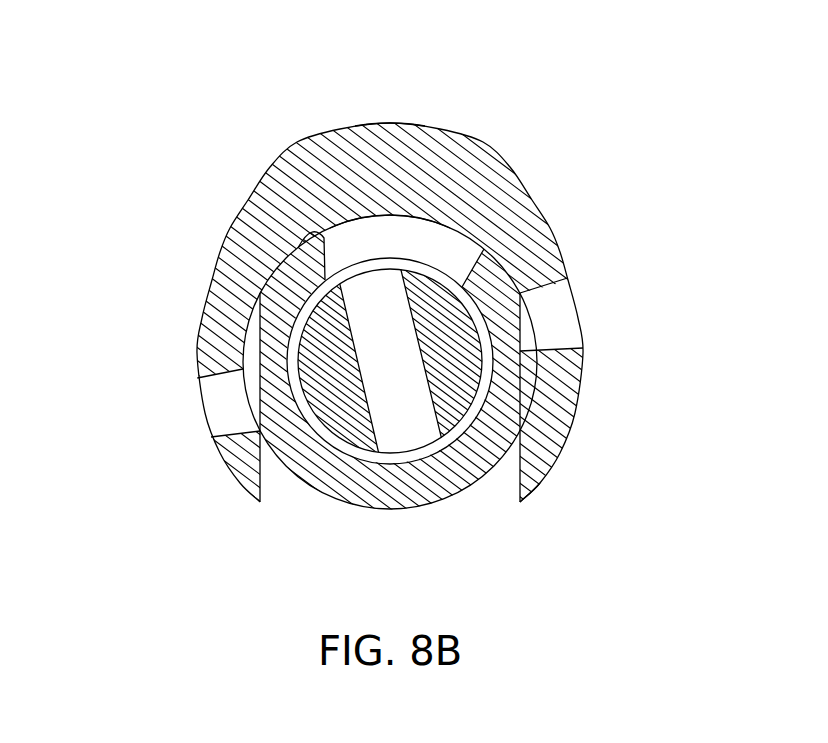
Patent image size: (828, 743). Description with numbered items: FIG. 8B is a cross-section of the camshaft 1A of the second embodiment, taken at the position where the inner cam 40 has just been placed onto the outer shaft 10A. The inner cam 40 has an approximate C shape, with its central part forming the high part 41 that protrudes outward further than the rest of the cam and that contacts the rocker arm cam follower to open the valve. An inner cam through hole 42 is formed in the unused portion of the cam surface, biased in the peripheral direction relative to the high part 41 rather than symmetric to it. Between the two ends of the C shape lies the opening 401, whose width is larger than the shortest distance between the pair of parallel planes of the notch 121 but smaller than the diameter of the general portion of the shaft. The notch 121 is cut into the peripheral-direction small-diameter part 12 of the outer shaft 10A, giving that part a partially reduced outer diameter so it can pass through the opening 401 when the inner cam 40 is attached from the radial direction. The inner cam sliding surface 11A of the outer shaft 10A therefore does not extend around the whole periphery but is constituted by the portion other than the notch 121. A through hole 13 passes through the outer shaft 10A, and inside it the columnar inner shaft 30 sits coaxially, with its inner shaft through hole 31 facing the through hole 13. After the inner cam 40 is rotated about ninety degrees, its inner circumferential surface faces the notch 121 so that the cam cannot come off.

The camshaft 1A is at (629, 120).
The inner cam 40 is at (493, 137).
The high part 41 is at (385, 123).
The inner cam through hole 42 is at (232, 434).
The opening 401 is at (520, 503).
The peripheral-direction small-diameter part 12 is at (539, 395).
The notch 121 is at (258, 340).
The through hole 13 is at (291, 248).
The inner cam sliding surface 11A is at (463, 226).
The outer shaft 10A is at (350, 516).
The inner shaft 30 is at (300, 294).
The inner shaft through hole 31 is at (374, 418).